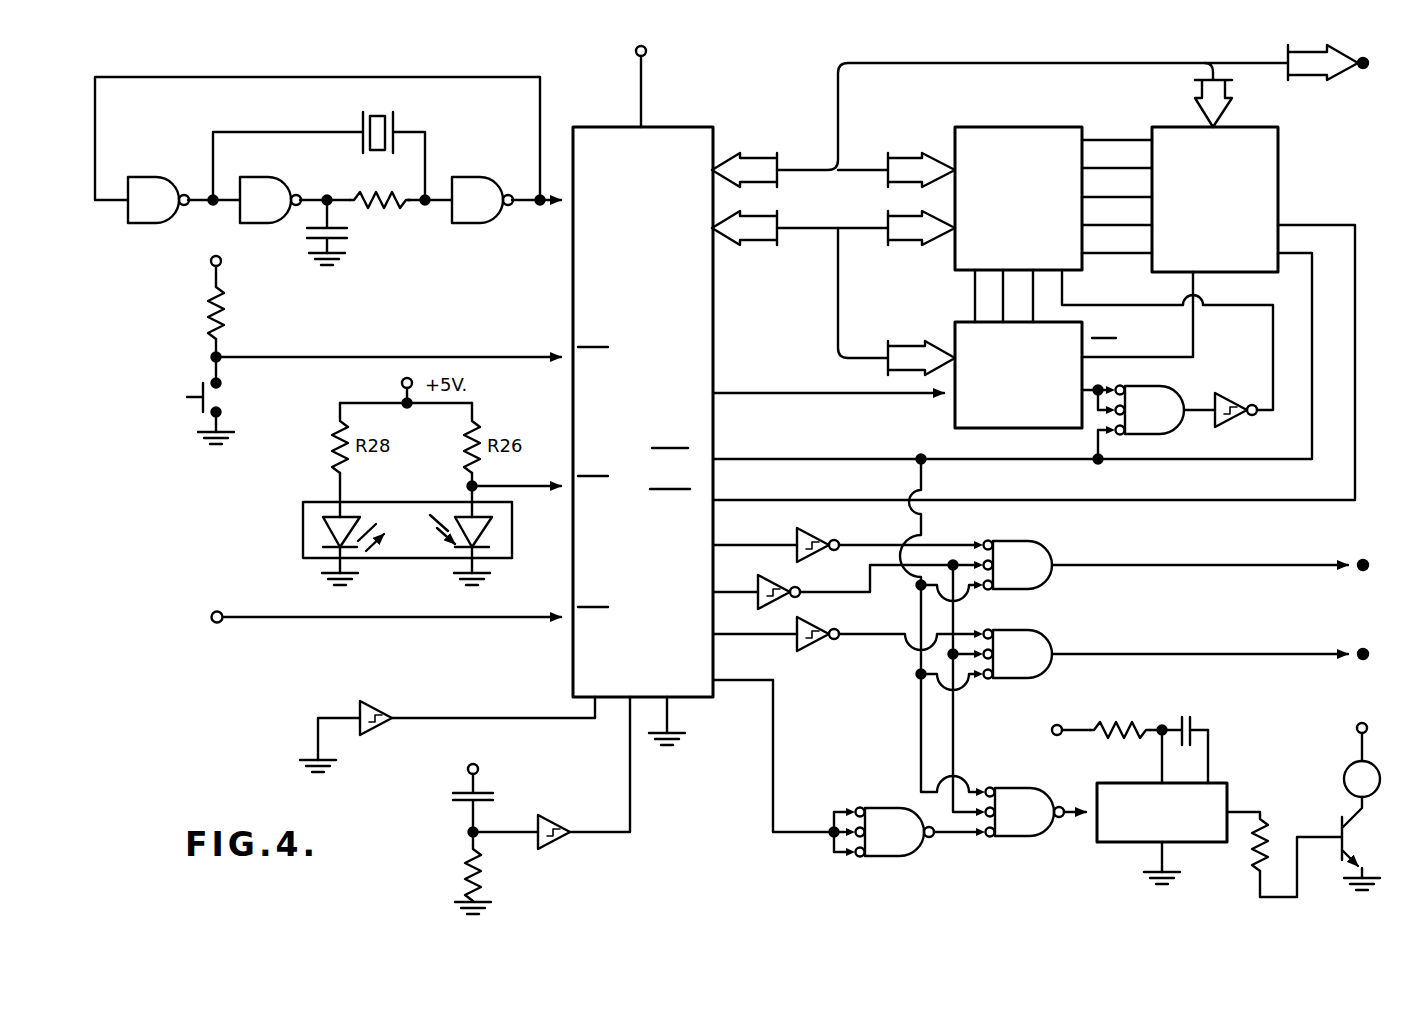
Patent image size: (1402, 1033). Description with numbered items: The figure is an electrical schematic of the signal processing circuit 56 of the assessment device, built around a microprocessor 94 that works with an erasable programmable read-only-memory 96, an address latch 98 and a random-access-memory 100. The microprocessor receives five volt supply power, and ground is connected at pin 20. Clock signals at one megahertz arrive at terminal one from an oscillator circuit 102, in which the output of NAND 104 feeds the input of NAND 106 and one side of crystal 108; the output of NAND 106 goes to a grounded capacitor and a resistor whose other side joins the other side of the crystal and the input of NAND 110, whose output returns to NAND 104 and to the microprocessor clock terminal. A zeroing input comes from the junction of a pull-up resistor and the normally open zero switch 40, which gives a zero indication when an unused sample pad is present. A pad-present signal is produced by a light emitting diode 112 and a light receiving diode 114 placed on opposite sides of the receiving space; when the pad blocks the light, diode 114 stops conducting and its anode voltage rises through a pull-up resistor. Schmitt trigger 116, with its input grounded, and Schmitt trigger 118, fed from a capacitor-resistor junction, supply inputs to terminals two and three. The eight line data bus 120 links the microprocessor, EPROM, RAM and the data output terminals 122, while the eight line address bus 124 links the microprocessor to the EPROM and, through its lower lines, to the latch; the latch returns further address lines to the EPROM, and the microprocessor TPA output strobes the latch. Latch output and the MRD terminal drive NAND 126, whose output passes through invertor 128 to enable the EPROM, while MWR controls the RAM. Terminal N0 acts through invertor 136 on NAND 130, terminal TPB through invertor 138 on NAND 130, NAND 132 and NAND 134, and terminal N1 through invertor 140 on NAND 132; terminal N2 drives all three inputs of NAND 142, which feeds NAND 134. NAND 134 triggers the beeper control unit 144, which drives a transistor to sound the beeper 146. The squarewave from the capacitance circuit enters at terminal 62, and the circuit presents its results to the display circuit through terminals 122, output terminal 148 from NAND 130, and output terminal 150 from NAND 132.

The pin 20 is at (681, 721).
The zero switch 40 is at (186, 408).
The signal processing circuit 56 is at (423, 843).
The terminal 62 is at (218, 611).
The microprocessor 94 is at (598, 127).
The erasable programmable read-only-memory 96 is at (981, 127).
The address latch 98 is at (955, 403).
The random-access-memory 100 is at (1278, 158).
The oscillator circuit 102 is at (328, 154).
The NAND 104 is at (173, 155).
The NAND 106 is at (285, 155).
The crystal 108 is at (400, 118).
The NAND 110 is at (497, 223).
The light emitting diode 112 is at (325, 526).
The light receiving diode 114 is at (488, 541).
The Schmitt trigger 116 is at (378, 702).
The Schmitt trigger 118 is at (556, 818).
The data bus 120 is at (918, 63).
The output terminals 122 is at (1368, 66).
The address bus 124 is at (868, 228).
The NAND 126 is at (1163, 386).
The invertor 128 is at (1232, 425).
The NAND 130 is at (1040, 541).
The NAND 132 is at (1040, 630).
The NAND 134 is at (1026, 838).
The invertor 136 is at (812, 529).
The invertor 138 is at (770, 577).
The invertor 140 is at (812, 652).
The NAND 142 is at (896, 807).
The beeper control unit 144 is at (1118, 783).
The beeper 146 is at (1349, 767).
The output terminal 148 is at (1364, 560).
The output terminal 150 is at (1364, 649).